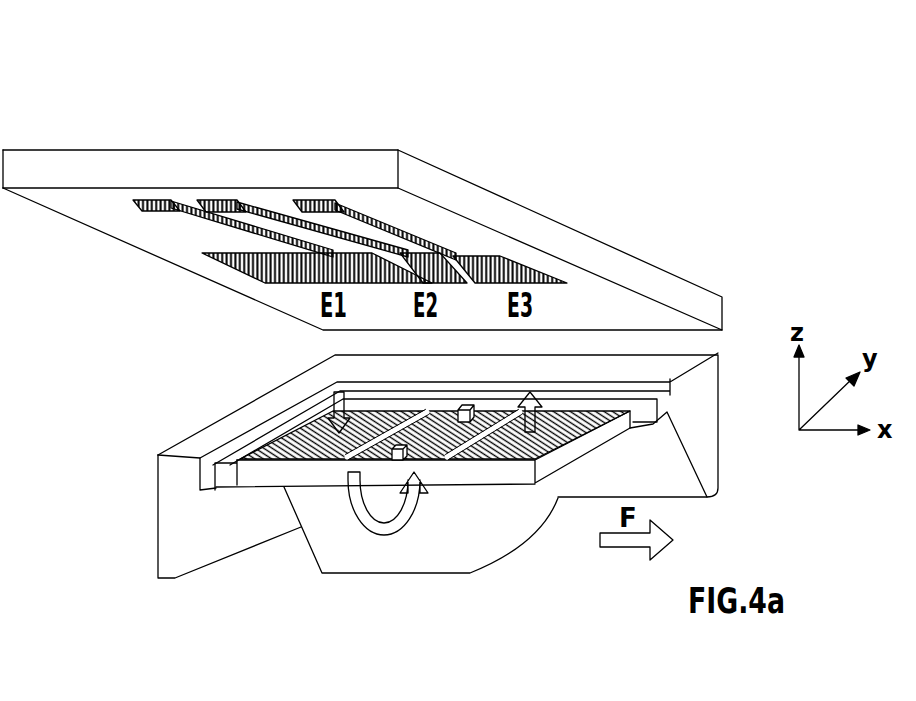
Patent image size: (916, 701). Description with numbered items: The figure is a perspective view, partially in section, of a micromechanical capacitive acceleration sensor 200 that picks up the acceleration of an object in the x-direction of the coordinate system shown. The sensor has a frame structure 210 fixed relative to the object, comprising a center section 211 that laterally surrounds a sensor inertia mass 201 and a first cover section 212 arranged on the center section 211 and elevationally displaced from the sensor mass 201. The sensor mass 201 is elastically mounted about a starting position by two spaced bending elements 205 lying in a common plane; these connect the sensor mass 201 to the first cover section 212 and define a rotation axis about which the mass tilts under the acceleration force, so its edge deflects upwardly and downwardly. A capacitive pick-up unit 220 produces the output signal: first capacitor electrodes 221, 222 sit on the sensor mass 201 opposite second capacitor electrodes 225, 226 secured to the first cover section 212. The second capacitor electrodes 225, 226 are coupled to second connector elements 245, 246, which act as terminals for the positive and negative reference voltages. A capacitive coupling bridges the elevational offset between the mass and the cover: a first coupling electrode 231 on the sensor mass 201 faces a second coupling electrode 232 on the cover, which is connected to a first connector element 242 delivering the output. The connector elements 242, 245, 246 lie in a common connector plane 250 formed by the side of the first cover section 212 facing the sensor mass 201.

The acceleration sensor 200 is at (110, 490).
The sensor inertia mass 201 is at (333, 540).
The bending elements 205 is at (493, 415).
The frame structure 210 is at (729, 278).
The center section 211 is at (705, 467).
The first cover section 212 is at (273, 172).
The capacitive pick-up unit 220 is at (250, 385).
The first capacitor electrode 221 is at (318, 443).
The first capacitor electrode 222 is at (553, 445).
The second capacitor electrode 225 is at (227, 262).
The second capacitor electrode 226 is at (513, 263).
The first coupling electrode 231 is at (447, 447).
The second coupling electrode 232 is at (377, 257).
The first connector element 242 is at (217, 202).
The second connector element 245 is at (152, 202).
The second connector element 246 is at (317, 202).
The common connector plane 250 is at (617, 310).